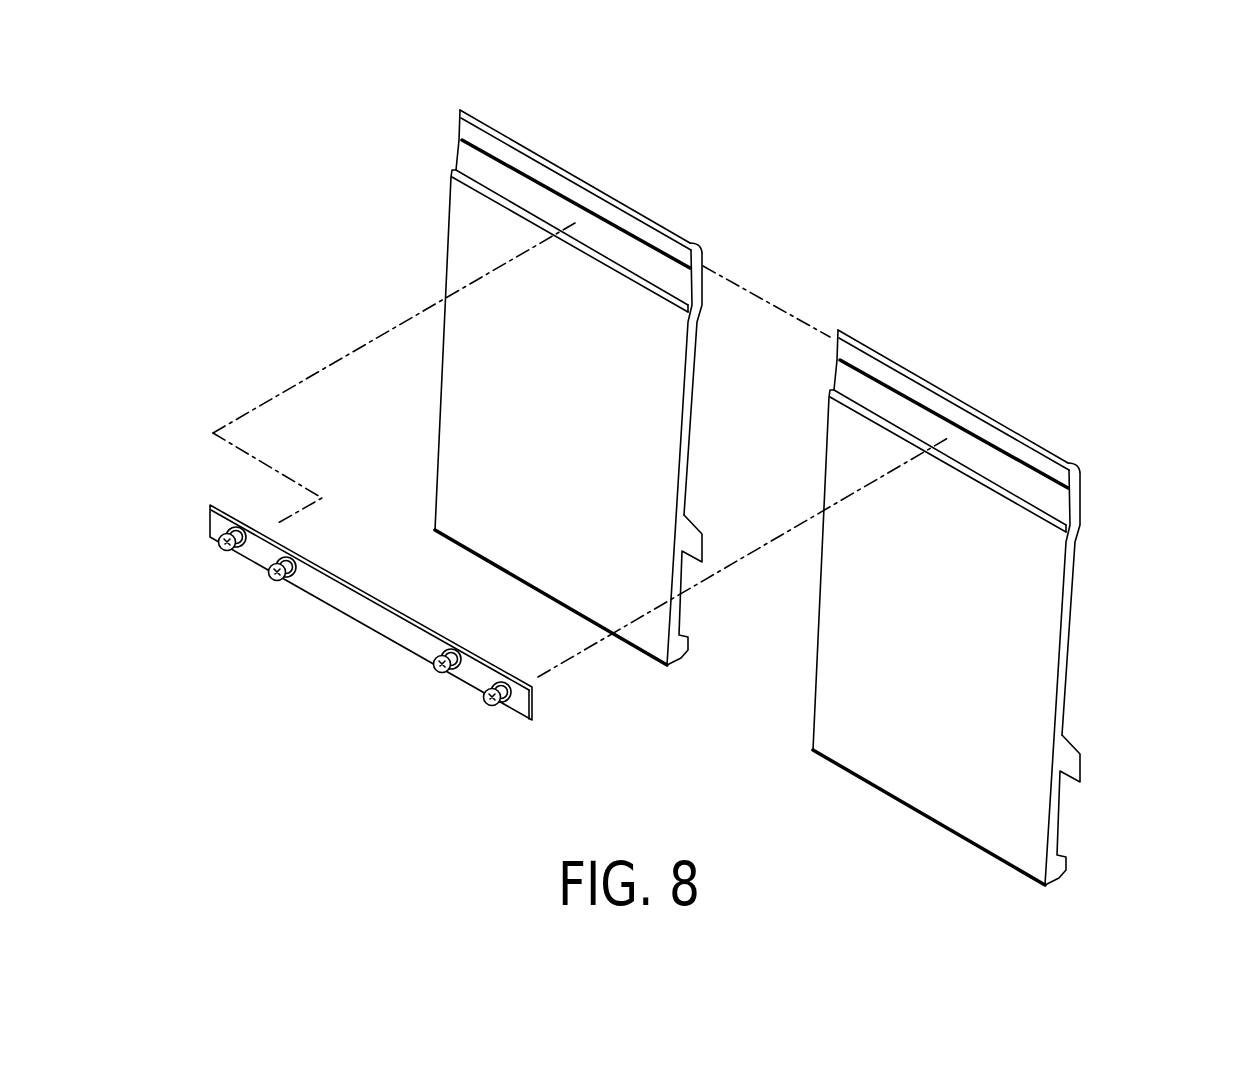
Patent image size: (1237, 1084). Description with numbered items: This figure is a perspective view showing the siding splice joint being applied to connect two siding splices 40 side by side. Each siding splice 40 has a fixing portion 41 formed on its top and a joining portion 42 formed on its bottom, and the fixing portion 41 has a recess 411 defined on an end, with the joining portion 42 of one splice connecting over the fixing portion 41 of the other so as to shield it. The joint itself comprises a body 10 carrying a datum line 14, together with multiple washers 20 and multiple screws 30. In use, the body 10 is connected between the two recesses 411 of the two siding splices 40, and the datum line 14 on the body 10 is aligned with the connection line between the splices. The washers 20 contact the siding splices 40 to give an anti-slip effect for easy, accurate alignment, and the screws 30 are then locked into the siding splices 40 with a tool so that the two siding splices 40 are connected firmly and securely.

The body 10 is at (430, 613).
The datum line 14 is at (370, 607).
The washer 20 is at (544, 704).
The screw 30 is at (472, 709).
The siding splice 40 is at (757, 487).
The fixing portion 41 is at (698, 289).
The recess 411 is at (613, 240).
The joining portion 42 is at (688, 608).